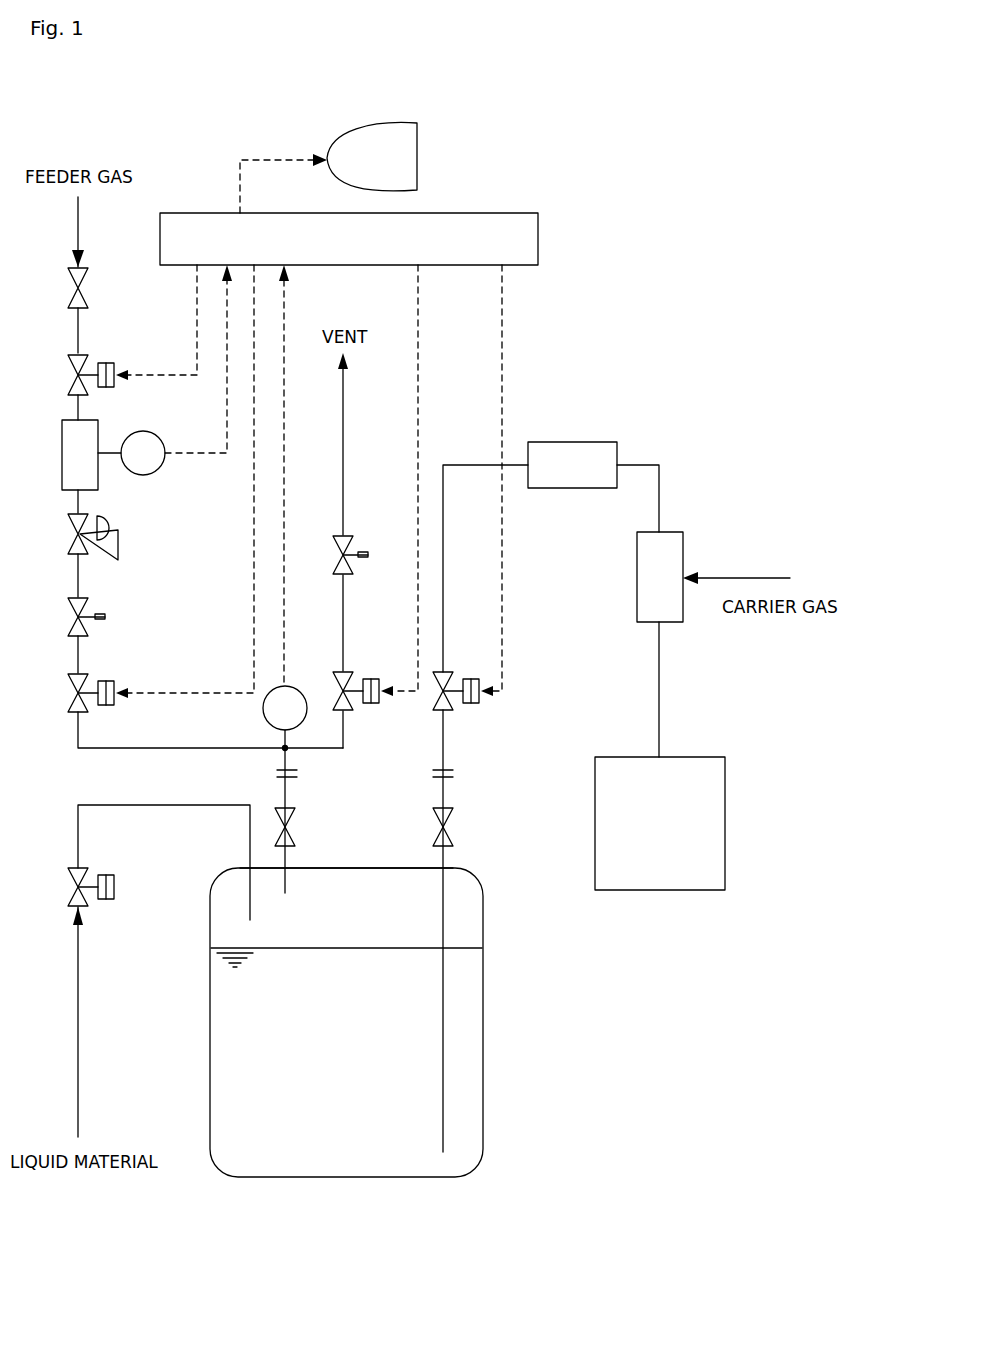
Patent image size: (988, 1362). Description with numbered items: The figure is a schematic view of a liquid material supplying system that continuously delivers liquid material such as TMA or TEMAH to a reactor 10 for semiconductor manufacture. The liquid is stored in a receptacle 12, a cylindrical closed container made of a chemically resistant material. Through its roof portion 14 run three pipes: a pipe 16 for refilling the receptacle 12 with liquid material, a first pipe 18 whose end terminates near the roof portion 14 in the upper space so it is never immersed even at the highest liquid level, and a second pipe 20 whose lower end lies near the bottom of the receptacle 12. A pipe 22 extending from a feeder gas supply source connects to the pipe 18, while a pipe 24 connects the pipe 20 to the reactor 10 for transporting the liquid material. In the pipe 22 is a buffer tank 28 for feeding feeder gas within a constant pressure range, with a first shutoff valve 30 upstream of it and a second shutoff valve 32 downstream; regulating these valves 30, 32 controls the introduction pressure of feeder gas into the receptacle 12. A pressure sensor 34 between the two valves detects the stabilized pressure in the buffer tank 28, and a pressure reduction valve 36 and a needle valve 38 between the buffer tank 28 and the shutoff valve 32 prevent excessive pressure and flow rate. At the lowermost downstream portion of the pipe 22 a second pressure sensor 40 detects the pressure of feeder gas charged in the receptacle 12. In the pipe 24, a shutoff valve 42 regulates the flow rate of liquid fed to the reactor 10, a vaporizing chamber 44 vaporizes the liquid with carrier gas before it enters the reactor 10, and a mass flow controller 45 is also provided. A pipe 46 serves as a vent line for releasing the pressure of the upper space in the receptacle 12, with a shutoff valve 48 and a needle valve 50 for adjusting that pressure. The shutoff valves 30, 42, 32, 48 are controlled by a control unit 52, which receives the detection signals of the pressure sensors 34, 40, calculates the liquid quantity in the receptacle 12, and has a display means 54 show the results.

The reactor 10 is at (685, 757).
The receptacle 12 is at (484, 919).
The roof portion 14 is at (400, 868).
The pipe 16 is at (80, 985).
The first pipe 18 is at (287, 790).
The second pipe 20 is at (445, 790).
The first pipe 22 is at (163, 748).
The second pipe 24 is at (470, 465).
The buffer tank 28 is at (62, 442).
The first shutoff valve 30 is at (80, 355).
The second shutoff valve 32 is at (80, 675).
The first pressure detection means 34 is at (148, 432).
The pressure reduction valve 36 is at (76, 518).
The needle valve 38 is at (80, 598).
The second pressure detection means 40 is at (266, 726).
The shutoff valve 42 is at (472, 703).
The vaporizing chamber 44 is at (674, 532).
The mass flow controller 45 is at (577, 442).
The pipe 46 is at (343, 428).
The shutoff valve 48 is at (345, 670).
The needle valve 50 is at (345, 532).
The control unit 52 is at (468, 213).
The display means 54 is at (417, 150).